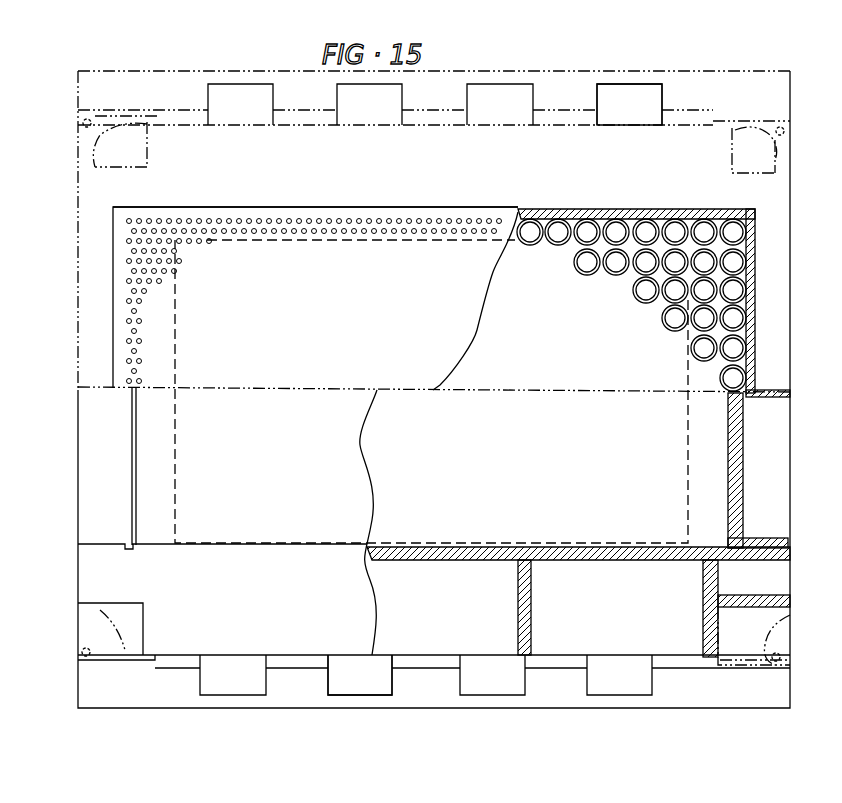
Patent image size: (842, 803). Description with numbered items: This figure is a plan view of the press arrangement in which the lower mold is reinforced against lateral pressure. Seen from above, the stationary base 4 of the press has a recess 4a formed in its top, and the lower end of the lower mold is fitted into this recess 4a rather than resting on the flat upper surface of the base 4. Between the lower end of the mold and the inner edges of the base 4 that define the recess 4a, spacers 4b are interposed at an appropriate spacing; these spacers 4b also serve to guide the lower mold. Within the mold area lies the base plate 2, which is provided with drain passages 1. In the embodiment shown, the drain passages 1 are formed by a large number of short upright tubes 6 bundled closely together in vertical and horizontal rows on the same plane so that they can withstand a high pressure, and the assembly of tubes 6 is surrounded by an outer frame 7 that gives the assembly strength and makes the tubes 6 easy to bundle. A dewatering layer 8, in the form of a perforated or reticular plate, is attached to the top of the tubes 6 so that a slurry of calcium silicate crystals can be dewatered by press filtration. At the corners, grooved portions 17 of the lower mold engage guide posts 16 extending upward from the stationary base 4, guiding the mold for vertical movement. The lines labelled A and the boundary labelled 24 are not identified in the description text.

The drain passages 1 is at (646, 242).
The base plate 2 is at (512, 208).
The stationary base 4 is at (572, 97).
The recess 4a is at (183, 118).
The spacers 4b is at (636, 105).
The tubes 6 is at (665, 322).
The outer frame 7 is at (426, 206).
The dewatering layer 8 is at (256, 222).
The guide posts 16 is at (757, 140).
The grooved portions 17 is at (735, 145).
The side wall 24 is at (93, 447).
The section line A is at (333, 240).